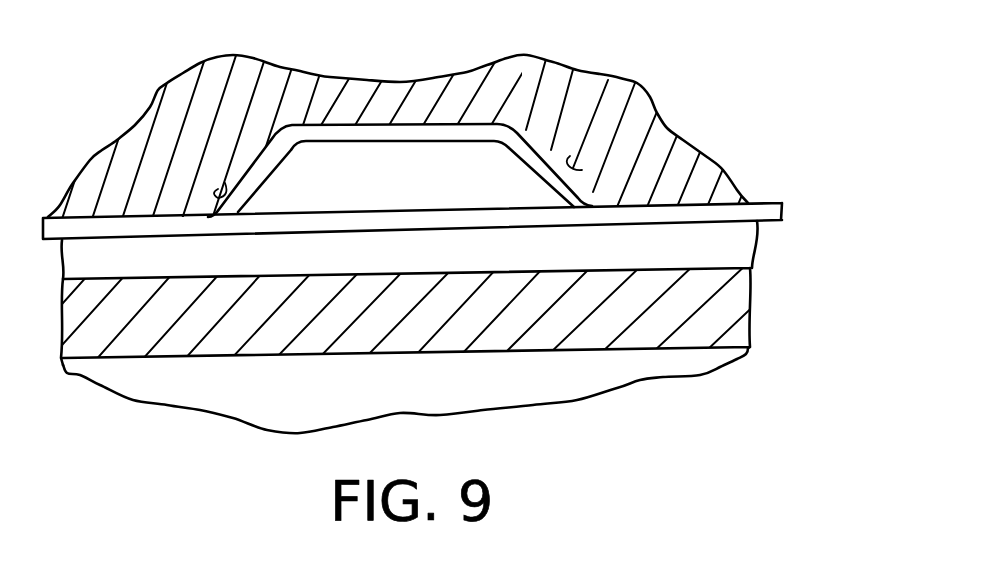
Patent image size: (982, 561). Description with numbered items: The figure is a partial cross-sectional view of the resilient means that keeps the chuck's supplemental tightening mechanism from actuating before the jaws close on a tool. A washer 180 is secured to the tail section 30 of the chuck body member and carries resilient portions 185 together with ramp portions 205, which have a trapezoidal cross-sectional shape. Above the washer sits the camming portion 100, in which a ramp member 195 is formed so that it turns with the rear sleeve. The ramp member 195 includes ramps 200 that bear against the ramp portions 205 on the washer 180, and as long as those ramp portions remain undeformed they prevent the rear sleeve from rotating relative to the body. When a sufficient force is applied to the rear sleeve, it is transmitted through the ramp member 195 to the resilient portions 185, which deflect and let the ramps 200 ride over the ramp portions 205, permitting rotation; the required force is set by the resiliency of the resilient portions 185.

The tail section 30 is at (735, 298).
The camming portion 100 is at (583, 93).
The washer 180 is at (797, 193).
The resilient portions 185 is at (416, 160).
The ramp member 195 is at (288, 126).
The ramps 200 is at (225, 183).
The ramp portions 205 is at (258, 178).